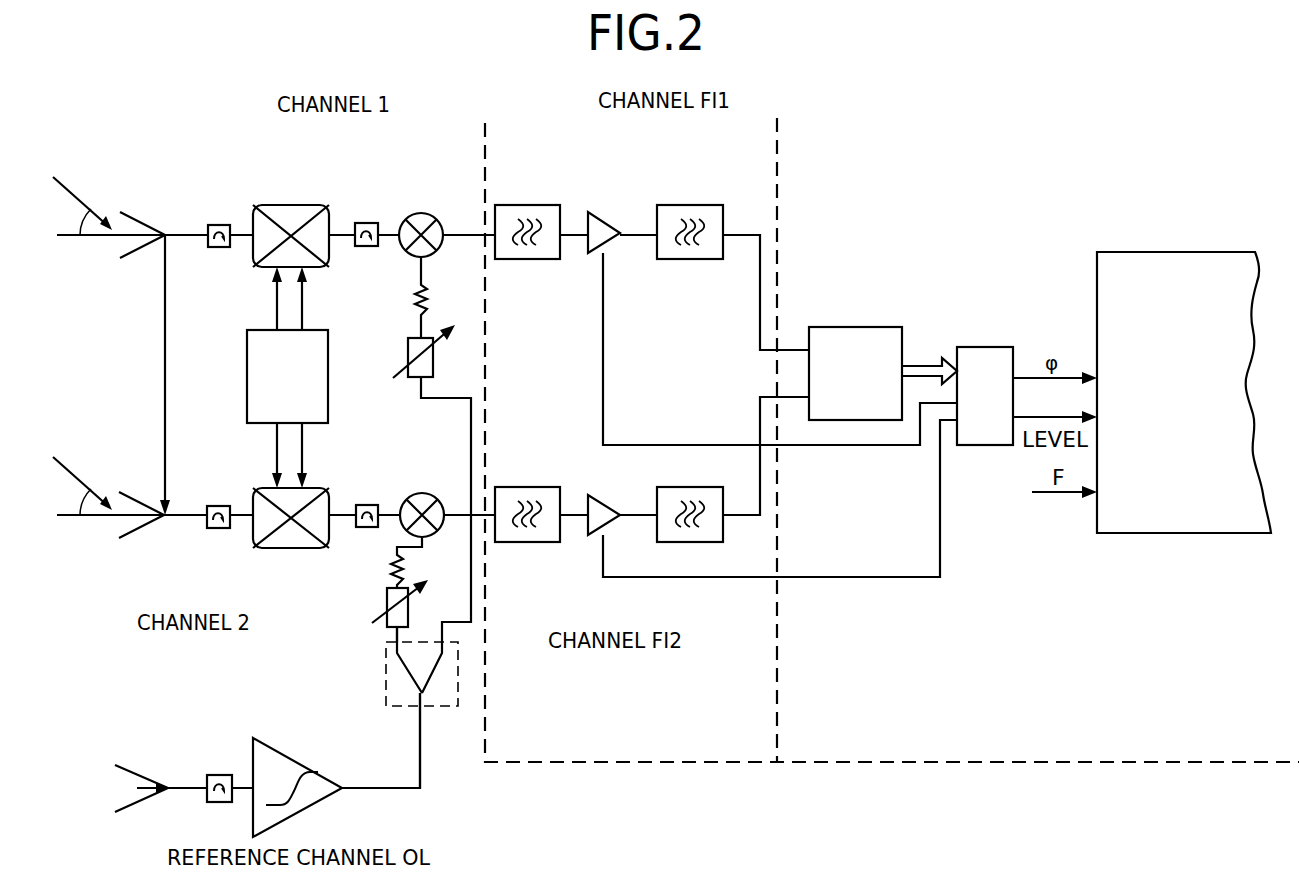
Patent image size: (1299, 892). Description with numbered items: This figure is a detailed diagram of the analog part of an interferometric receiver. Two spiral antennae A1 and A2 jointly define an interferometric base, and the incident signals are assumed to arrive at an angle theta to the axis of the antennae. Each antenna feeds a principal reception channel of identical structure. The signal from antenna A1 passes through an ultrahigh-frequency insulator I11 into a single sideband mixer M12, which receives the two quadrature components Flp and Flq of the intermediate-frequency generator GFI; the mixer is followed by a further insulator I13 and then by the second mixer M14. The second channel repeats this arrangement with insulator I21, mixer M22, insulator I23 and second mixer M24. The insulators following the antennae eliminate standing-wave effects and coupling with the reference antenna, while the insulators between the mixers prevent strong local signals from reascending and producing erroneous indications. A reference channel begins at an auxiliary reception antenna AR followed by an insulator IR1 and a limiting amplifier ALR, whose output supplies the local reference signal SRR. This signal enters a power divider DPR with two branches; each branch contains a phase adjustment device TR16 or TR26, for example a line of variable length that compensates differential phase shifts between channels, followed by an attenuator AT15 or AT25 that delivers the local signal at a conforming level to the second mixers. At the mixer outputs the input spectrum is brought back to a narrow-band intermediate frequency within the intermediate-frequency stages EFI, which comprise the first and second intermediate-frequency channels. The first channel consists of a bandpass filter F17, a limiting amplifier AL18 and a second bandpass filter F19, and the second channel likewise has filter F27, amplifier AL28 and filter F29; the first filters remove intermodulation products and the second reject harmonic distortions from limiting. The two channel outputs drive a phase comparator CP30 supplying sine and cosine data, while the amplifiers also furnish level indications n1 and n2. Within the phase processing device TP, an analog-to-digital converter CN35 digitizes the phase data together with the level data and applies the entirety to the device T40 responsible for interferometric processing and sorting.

The spiral antenna A1 is at (140, 222).
The antenna A2 is at (133, 505).
The ultrahigh-frequency insulator I11 is at (215, 225).
The insulator I13 is at (365, 223).
The insulator I21 is at (215, 506).
The insulator I23 is at (367, 505).
The single sideband mixer M12 is at (293, 205).
The first mixer M22 is at (288, 550).
The second mixer M14 is at (422, 212).
The second mixer M24 is at (422, 493).
The intermediate-frequency generator GFI is at (247, 372).
The local signal component FIp Flp is at (277, 303).
The local signal component FIq Flq is at (302, 303).
The attenuator AT15 is at (440, 300).
The phase adjustment device TR16 is at (400, 381).
The attenuator AT25 is at (387, 563).
The phase adjustment device TR26 is at (383, 597).
The power divider DPR is at (386, 666).
The auxiliary reception antenna AR is at (140, 768).
The insulator IR1 is at (220, 775).
The limiting amplifier ALR is at (305, 770).
The local reference signal SRR is at (420, 755).
The bandpass filter F17 is at (525, 205).
The limiting amplifier AL18 is at (608, 226).
The bandpass filter F19 is at (686, 205).
The bandpass filter F27 is at (525, 487).
The limiting amplifier AL28 is at (608, 507).
The bandpass filter F29 is at (680, 487).
The level indication n1 is at (657, 445).
The level indication n2 is at (640, 577).
The phase comparator CP30 is at (833, 327).
The analog-to-digital converter CN35 is at (985, 347).
The interferometric processing device T40 is at (1114, 263).
The intermediate-frequency stages EFI is at (720, 772).
The phase processing device TP is at (1011, 771).